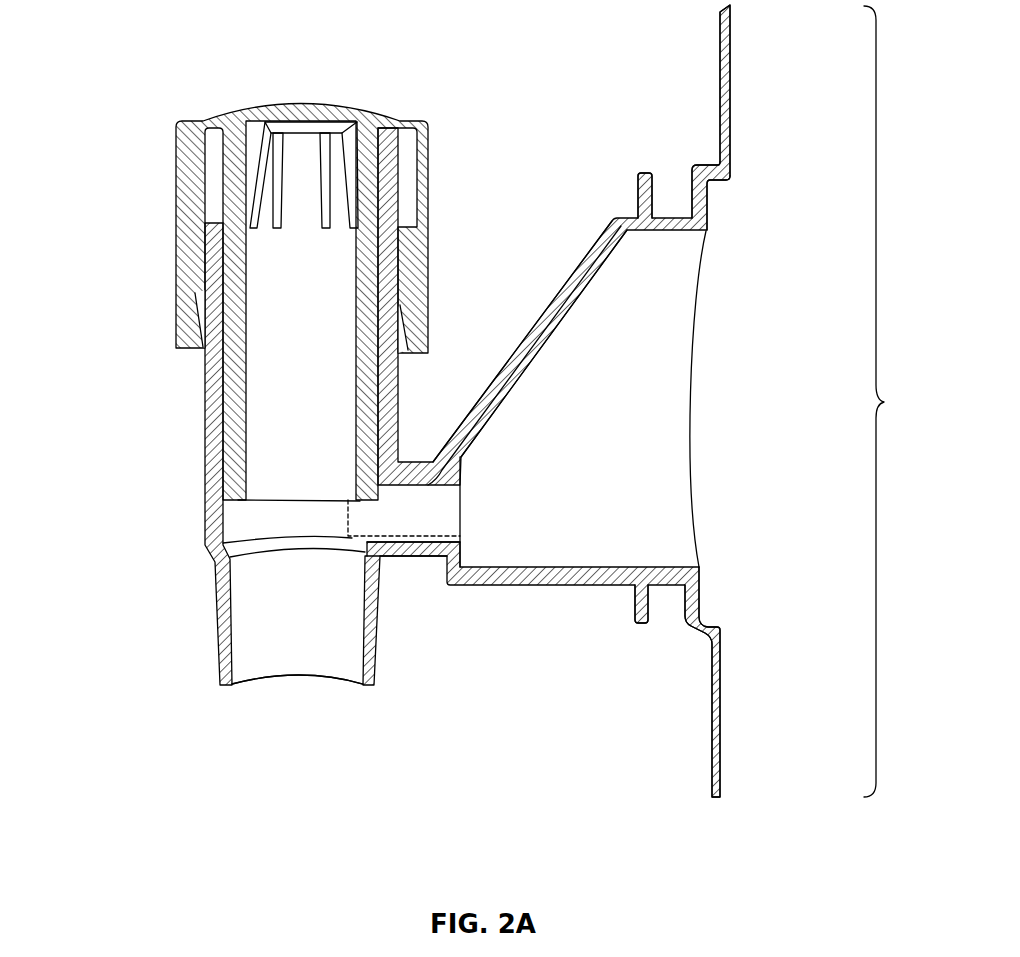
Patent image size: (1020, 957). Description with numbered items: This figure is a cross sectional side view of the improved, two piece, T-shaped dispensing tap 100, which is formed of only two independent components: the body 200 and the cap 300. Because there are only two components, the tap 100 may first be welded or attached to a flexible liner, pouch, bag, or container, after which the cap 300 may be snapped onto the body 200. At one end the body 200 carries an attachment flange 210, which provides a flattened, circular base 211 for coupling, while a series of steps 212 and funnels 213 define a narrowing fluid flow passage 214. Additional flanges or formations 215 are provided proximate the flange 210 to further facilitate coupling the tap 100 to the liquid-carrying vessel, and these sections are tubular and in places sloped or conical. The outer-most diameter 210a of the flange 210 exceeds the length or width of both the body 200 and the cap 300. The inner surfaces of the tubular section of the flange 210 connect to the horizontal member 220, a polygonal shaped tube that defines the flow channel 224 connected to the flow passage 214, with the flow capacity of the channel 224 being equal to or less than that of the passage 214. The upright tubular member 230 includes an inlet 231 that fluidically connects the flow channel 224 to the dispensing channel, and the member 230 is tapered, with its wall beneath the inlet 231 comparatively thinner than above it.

The dispensing tap 100 is at (136, 705).
The body 200 is at (511, 598).
The attachment flange 210 is at (720, 94).
The outer-most diameter 210a is at (884, 402).
The flattened base 211 is at (745, 637).
The steps 212 is at (708, 182).
The funnels 213 is at (537, 347).
The fluid flow passage 214 is at (431, 517).
The additional flanges or formations 215 is at (638, 184).
The horizontal member 220 is at (426, 558).
The flow channel 224 is at (301, 501).
The upright tubular member 230 is at (204, 452).
The inlet 231 is at (387, 517).
The cap 300 is at (165, 205).